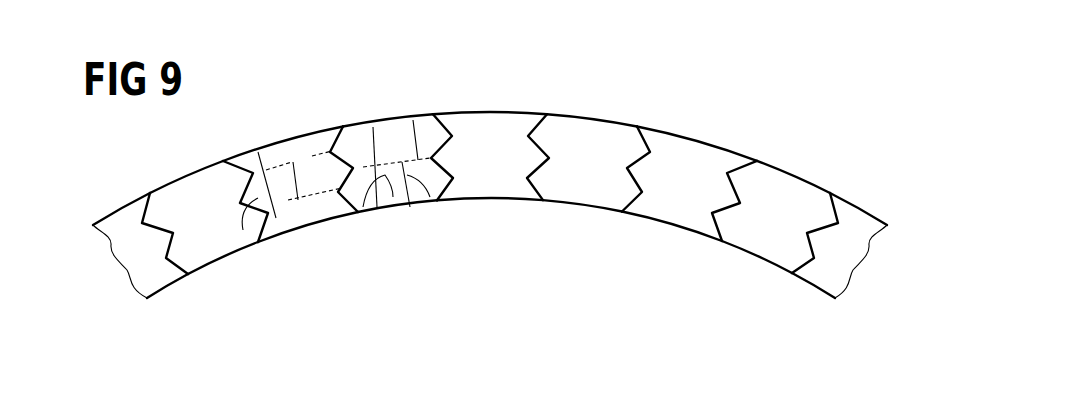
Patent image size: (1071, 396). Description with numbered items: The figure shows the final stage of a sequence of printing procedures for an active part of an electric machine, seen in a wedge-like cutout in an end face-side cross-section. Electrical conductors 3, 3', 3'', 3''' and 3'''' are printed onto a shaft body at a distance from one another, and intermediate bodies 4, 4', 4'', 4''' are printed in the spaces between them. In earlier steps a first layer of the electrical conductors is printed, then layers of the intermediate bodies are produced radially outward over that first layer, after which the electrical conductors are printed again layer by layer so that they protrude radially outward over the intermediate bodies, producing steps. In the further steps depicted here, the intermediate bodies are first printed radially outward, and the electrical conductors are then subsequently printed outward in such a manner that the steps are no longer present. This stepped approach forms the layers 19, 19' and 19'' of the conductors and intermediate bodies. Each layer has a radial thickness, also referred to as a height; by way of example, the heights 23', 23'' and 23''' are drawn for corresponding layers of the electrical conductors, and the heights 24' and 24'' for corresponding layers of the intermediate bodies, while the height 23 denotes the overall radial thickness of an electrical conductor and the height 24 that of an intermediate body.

The electrical conductor 3 is at (129, 224).
The electrical conductor 3' is at (290, 159).
The electrical conductor 3'' is at (491, 120).
The electrical conductor 3''' is at (689, 156).
The ring segment 3'''' is at (856, 226).
The intermediate body 4 is at (207, 195).
The intermediate body 4' is at (398, 131).
The intermediate body 4'' is at (596, 131).
The intermediate body 4''' is at (780, 191).
The layer 19 is at (421, 205).
The layer 19' is at (371, 178).
The layer 19'' is at (239, 159).
The height 23 is at (249, 257).
The height 23' is at (322, 250).
The height 23'' is at (286, 114).
The height 23''' is at (325, 117).
The height 24 is at (390, 229).
The height 24' is at (430, 224).
The height 24'' is at (396, 92).